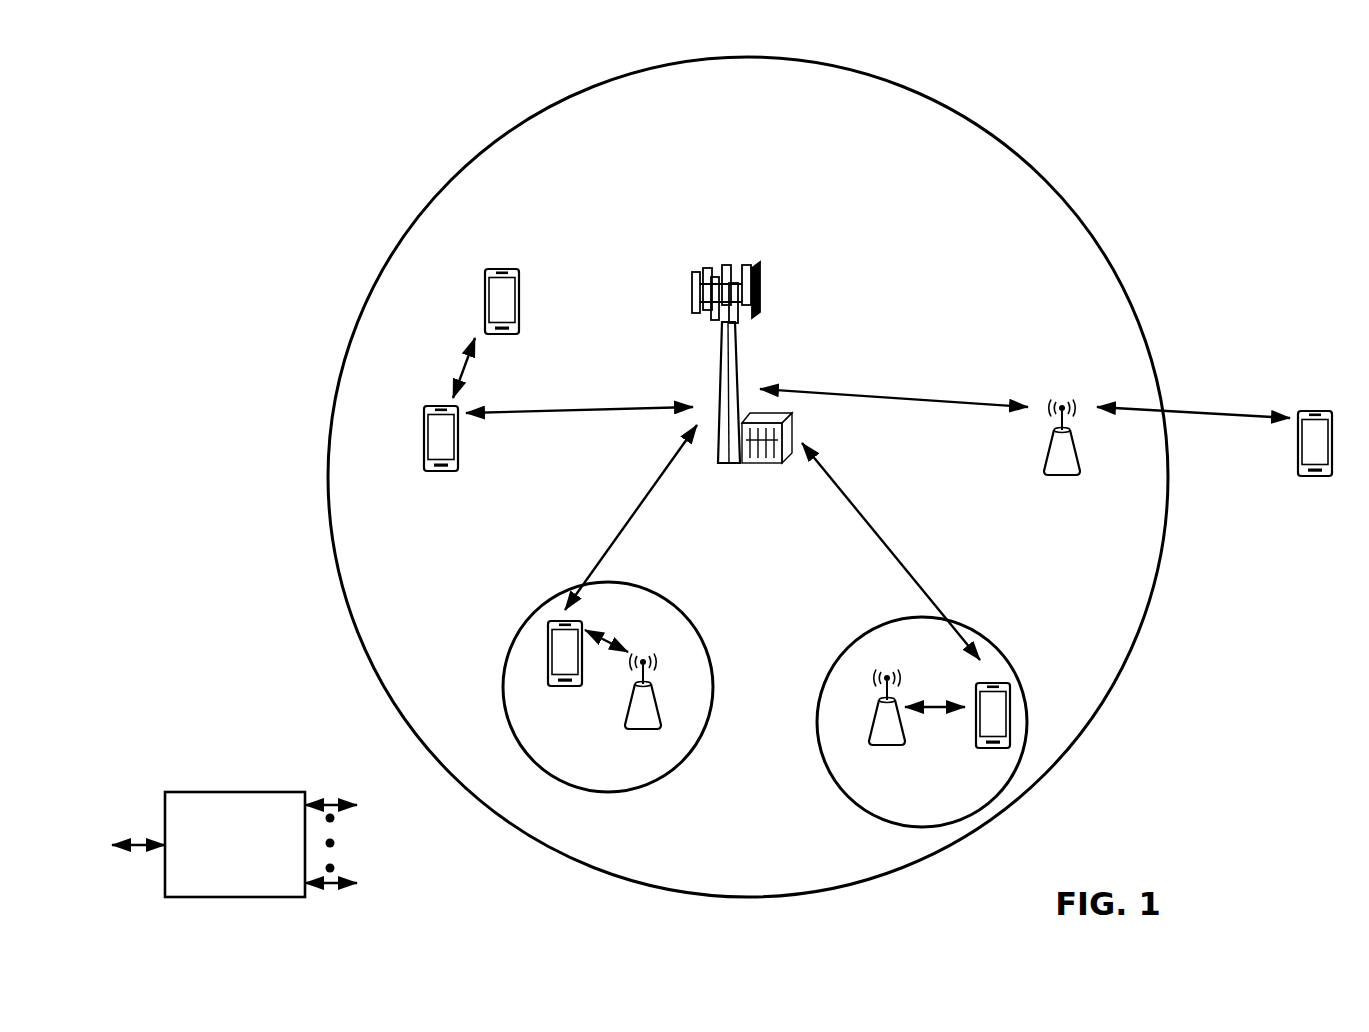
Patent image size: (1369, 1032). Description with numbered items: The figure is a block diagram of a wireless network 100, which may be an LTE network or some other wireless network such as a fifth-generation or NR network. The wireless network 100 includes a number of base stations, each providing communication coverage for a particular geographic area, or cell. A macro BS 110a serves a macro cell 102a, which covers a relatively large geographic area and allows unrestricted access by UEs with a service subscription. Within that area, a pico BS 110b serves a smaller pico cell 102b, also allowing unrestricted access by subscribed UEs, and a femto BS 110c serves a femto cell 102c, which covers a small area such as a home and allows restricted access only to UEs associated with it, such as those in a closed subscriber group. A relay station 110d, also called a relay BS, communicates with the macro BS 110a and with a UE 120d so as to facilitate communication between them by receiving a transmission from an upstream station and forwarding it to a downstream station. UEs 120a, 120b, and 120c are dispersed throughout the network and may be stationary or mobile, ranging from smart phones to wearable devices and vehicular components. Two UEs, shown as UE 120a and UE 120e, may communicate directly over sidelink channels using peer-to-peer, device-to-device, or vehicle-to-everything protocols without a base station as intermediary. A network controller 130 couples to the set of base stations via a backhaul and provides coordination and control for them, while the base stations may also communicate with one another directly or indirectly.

The wireless network 100 is at (208, 47).
The macro cell 102a is at (1028, 161).
The pico cell 102b is at (704, 627).
The femto cell 102c is at (860, 636).
The macro BS 110a is at (738, 262).
The pico BS 110b is at (662, 718).
The femto BS 110c is at (870, 733).
The relay station 110d is at (1064, 398).
The UE 120a is at (424, 434).
The UE 120b is at (548, 689).
The UE 120c is at (975, 749).
The UE 120d is at (1330, 410).
The UE 120e is at (484, 290).
The network controller 130 is at (234, 792).